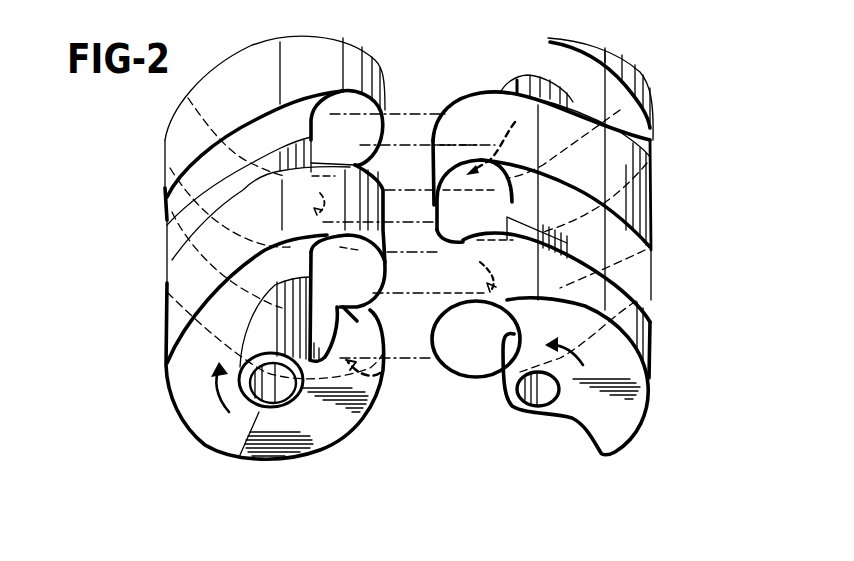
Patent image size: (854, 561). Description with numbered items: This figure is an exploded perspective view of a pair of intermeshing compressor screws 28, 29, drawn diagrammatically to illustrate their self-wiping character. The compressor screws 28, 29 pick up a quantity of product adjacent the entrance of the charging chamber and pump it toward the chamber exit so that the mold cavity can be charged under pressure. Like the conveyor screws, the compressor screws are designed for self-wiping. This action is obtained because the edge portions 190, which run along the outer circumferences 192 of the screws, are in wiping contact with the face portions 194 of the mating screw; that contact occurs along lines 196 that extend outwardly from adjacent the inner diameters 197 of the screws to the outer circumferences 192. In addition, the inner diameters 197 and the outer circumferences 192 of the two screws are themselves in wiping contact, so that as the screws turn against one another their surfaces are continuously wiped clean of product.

The compressor screw 28 is at (661, 125).
The compressor screw 29 is at (149, 145).
The edge portion 190 is at (443, 384).
The outer circumference 192 is at (180, 112).
The face portion 194 is at (175, 222).
The line 196 is at (320, 108).
The inner diameter 197 is at (284, 157).